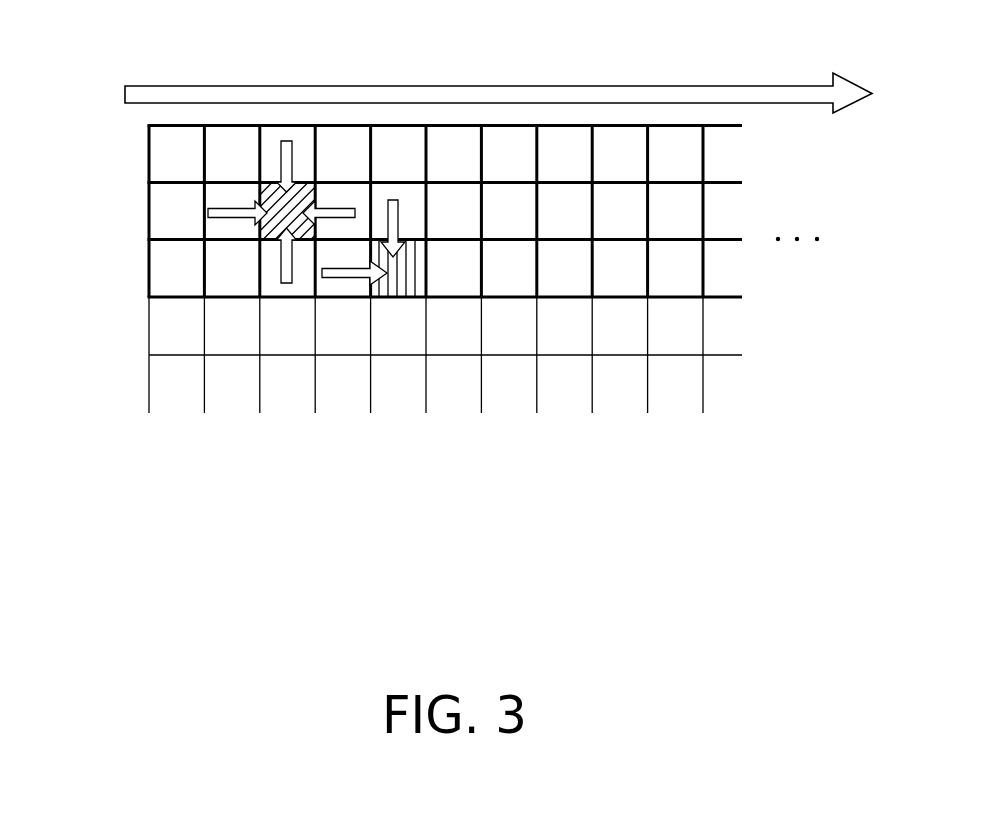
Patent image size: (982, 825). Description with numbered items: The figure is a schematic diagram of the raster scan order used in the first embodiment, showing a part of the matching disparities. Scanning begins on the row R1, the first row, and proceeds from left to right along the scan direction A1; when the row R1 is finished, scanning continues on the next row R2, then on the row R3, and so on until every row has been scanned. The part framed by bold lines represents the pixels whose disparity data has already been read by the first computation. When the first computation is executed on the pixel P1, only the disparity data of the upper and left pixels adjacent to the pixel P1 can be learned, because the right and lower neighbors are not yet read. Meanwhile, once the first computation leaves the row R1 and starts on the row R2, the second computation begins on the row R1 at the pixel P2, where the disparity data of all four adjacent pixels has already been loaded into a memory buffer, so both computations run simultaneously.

The row R1 is at (124, 163).
The row R2 is at (124, 220).
The third row of pixel array R3 is at (124, 274).
The pixel P1 is at (393, 288).
The pixel P2 is at (266, 236).
The scan direction A1 is at (854, 84).